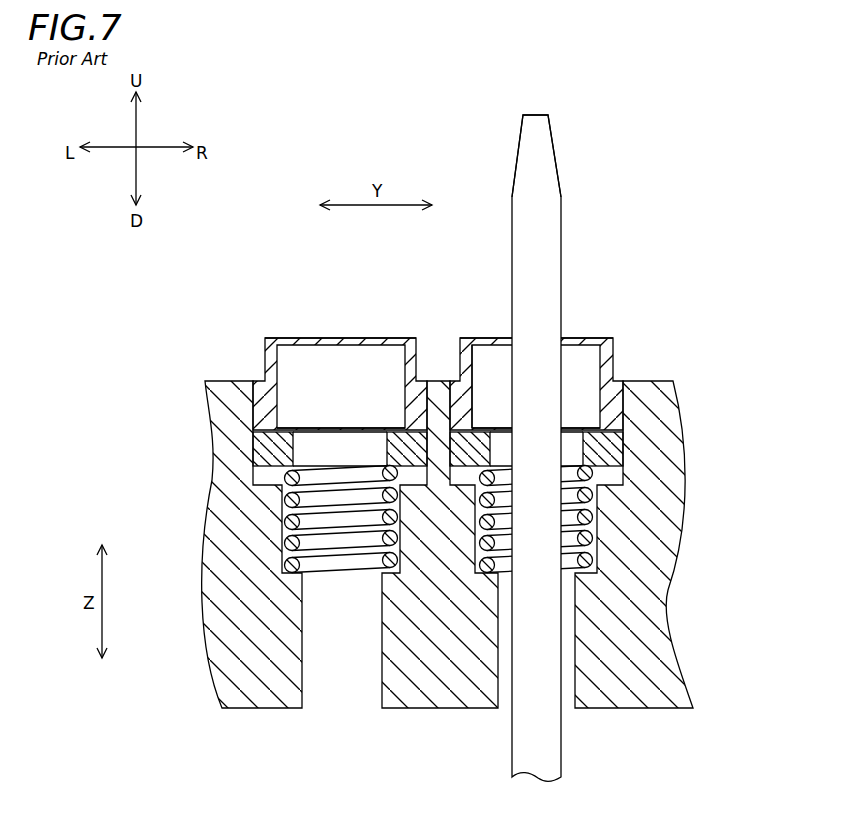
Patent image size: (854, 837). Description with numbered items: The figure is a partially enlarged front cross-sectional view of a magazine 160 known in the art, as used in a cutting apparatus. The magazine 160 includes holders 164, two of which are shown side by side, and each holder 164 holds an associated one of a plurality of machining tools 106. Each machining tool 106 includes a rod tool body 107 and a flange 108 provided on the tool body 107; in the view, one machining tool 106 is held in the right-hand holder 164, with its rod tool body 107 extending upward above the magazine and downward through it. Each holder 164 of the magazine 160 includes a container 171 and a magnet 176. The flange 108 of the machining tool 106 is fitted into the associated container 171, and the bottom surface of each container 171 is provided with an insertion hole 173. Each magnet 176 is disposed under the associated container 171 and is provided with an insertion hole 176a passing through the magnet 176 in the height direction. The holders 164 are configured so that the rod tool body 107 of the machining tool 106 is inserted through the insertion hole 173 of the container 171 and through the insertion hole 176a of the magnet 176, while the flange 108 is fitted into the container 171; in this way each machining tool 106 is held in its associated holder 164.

The machining tool 106 is at (570, 246).
The rod tool body 107 is at (562, 205).
The flange 108 is at (487, 338).
The magazine 160 is at (233, 313).
The holder 164 is at (302, 330).
The container 171 is at (350, 338).
The insertion hole 173 is at (288, 418).
The magnet 176 is at (270, 470).
The insertion hole 176a is at (300, 455).